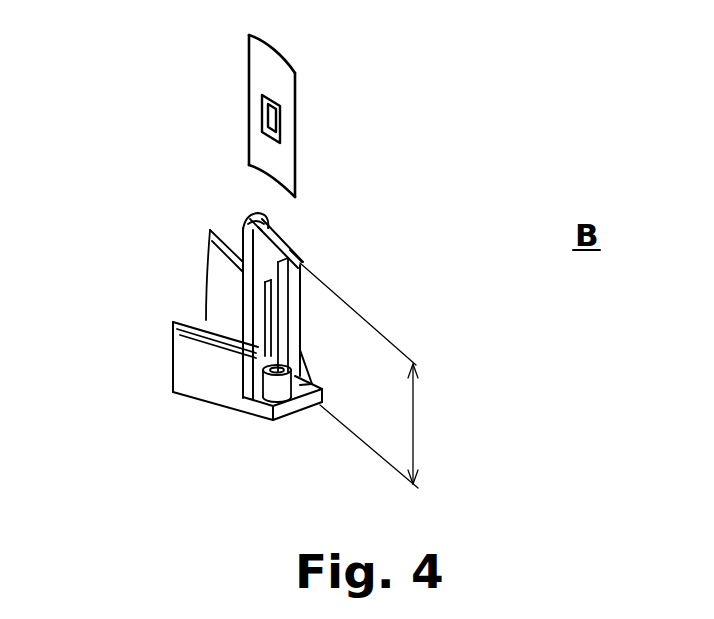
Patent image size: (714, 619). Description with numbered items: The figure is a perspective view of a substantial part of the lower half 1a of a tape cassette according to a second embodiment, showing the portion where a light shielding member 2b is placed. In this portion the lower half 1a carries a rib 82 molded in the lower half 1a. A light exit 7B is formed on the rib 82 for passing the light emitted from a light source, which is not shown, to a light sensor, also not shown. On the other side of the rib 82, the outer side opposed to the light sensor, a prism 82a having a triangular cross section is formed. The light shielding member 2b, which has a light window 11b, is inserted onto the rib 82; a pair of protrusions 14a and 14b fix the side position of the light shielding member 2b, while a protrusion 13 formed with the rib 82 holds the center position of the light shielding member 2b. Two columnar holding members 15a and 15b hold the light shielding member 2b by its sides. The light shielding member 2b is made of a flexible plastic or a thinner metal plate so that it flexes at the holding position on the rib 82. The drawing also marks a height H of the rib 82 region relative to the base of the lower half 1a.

The lower half 1a is at (218, 388).
The light shielding member 2b is at (185, 116).
The light window 11b is at (278, 117).
The protrusion 13 is at (210, 320).
The protrusion 14a is at (246, 220).
The protrusion 14b is at (298, 298).
The columnar holding member 15a is at (243, 290).
The columnar holding member 15b is at (149, 366).
The light exit 7B is at (243, 305).
The rib 82 is at (268, 232).
The prism 82a is at (300, 264).
The height dimension H is at (383, 375).